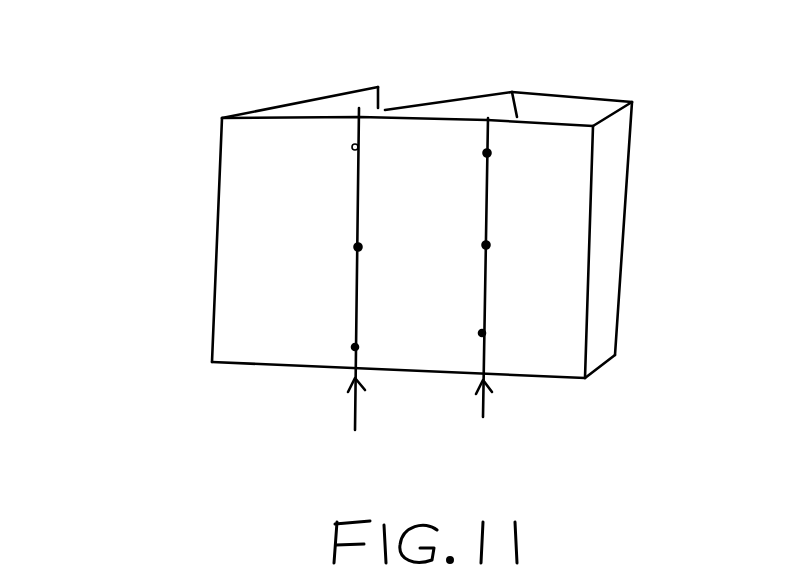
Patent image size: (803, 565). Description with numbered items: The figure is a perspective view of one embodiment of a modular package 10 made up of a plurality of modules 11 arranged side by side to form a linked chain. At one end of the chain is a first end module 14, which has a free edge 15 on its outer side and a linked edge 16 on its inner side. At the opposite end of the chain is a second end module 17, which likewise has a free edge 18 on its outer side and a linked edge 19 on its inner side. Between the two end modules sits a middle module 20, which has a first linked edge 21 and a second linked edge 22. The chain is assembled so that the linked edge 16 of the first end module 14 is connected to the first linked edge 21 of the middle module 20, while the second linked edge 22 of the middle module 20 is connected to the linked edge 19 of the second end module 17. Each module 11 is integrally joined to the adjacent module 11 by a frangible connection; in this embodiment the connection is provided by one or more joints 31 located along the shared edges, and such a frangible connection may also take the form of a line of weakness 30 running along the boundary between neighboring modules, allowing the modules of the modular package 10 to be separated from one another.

The modular package 10 is at (142, 67).
The module 11 is at (417, 320).
The first end module 14 is at (278, 160).
The free edge 15 is at (212, 362).
The linked edge 16 is at (363, 290).
The second end module 17 is at (548, 160).
The free edge 18 is at (585, 378).
The linked edge 19 is at (491, 289).
The middle module 20 is at (422, 153).
The first linked edge 21 is at (365, 110).
The second linked edge 22 is at (493, 120).
The line of weakness 30 is at (358, 247).
The joint 31 is at (486, 245).